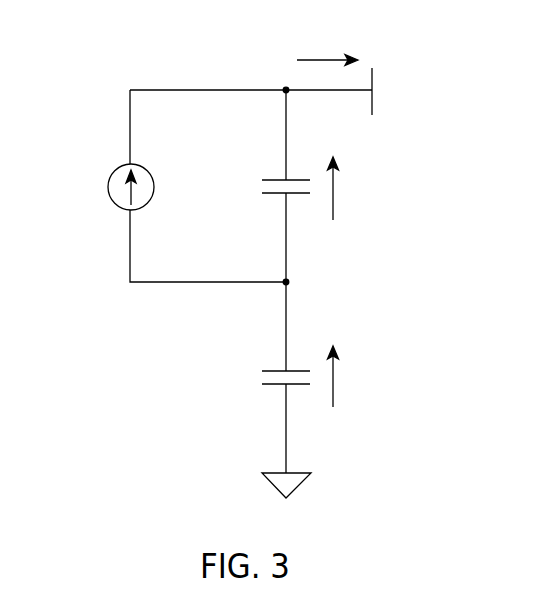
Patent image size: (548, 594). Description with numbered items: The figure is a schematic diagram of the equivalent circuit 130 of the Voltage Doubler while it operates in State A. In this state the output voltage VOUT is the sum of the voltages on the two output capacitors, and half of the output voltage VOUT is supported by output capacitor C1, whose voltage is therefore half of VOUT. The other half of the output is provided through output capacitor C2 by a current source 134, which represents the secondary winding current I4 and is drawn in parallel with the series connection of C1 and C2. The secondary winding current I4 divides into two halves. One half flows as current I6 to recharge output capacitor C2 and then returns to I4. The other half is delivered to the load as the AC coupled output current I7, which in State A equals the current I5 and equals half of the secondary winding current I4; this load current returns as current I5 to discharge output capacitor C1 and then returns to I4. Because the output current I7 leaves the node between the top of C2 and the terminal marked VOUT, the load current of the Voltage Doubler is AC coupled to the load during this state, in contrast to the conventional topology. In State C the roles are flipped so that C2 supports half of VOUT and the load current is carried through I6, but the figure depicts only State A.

The equivalent circuit 130 is at (239, 250).
The current source 134 is at (110, 106).
The secondary winding current I4 is at (167, 188).
The returning load current I5 is at (342, 376).
The recharge current I6 is at (342, 188).
The output current I7 is at (327, 46).
The output capacitor C1 is at (272, 373).
The output capacitor C2 is at (272, 183).
The output voltage VOUT is at (402, 91).